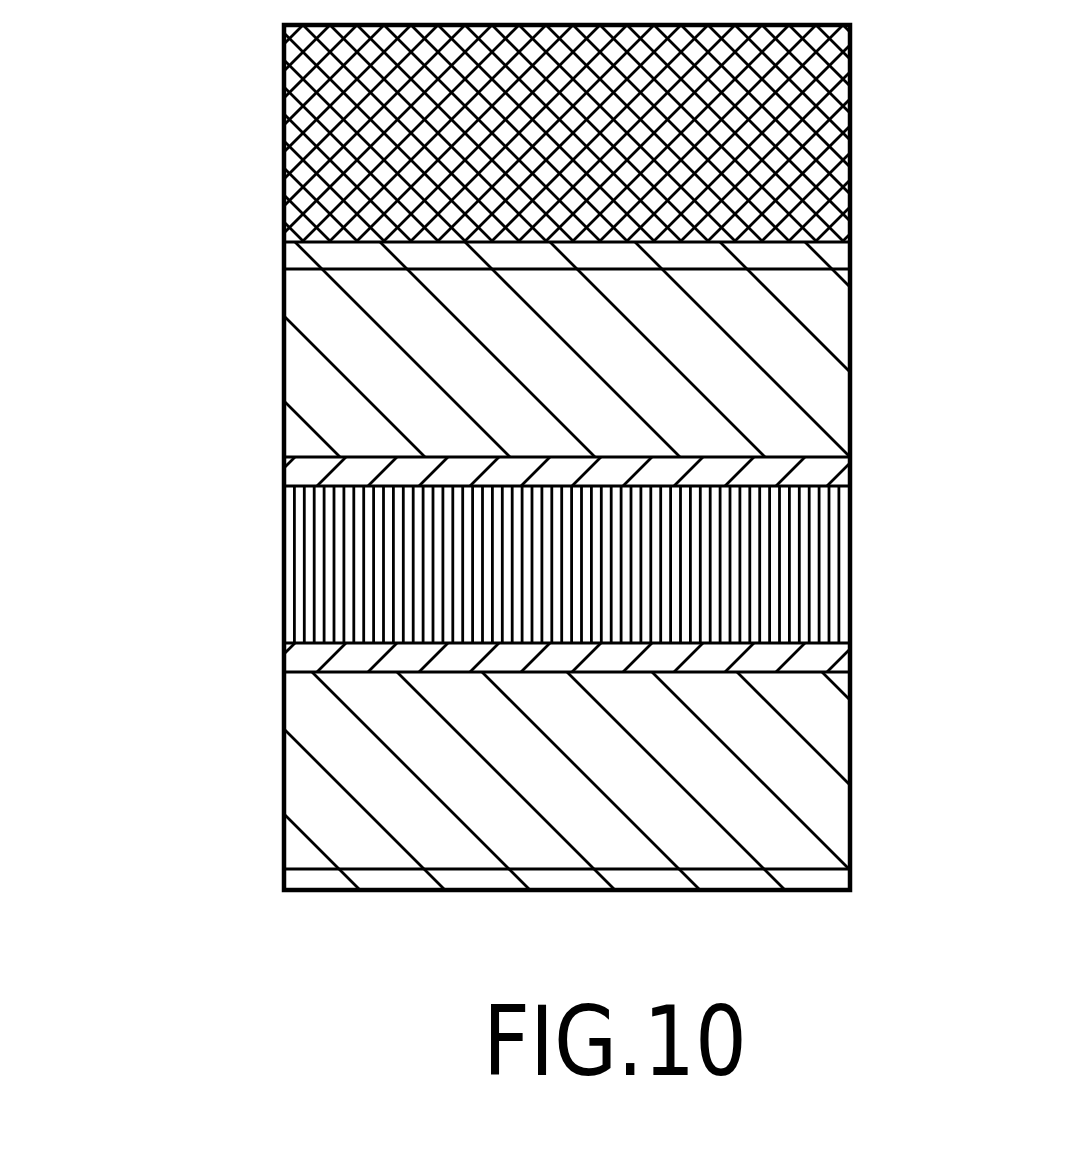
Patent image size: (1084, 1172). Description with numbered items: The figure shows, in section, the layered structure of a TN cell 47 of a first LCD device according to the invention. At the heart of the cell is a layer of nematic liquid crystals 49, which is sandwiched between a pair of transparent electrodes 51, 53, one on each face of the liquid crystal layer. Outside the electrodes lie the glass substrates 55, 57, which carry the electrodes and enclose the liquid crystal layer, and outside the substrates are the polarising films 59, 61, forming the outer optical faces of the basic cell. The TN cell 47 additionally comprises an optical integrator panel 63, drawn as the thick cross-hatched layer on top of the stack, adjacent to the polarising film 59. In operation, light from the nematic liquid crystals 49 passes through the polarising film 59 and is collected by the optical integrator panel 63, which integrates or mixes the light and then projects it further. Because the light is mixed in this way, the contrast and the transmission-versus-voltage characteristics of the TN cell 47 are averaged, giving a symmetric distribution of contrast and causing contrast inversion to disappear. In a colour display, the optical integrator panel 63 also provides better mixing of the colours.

The TN cell 47 is at (181, 180).
The nematic liquid crystals 49 is at (834, 566).
The transparent electrode 51 is at (834, 472).
The transparent electrode 53 is at (834, 661).
The glass substrate 55 is at (836, 353).
The glass substrate 57 is at (836, 765).
The polarising film 59 is at (834, 257).
The polarising film 61 is at (834, 878).
The optical integrator panel 63 is at (836, 112).